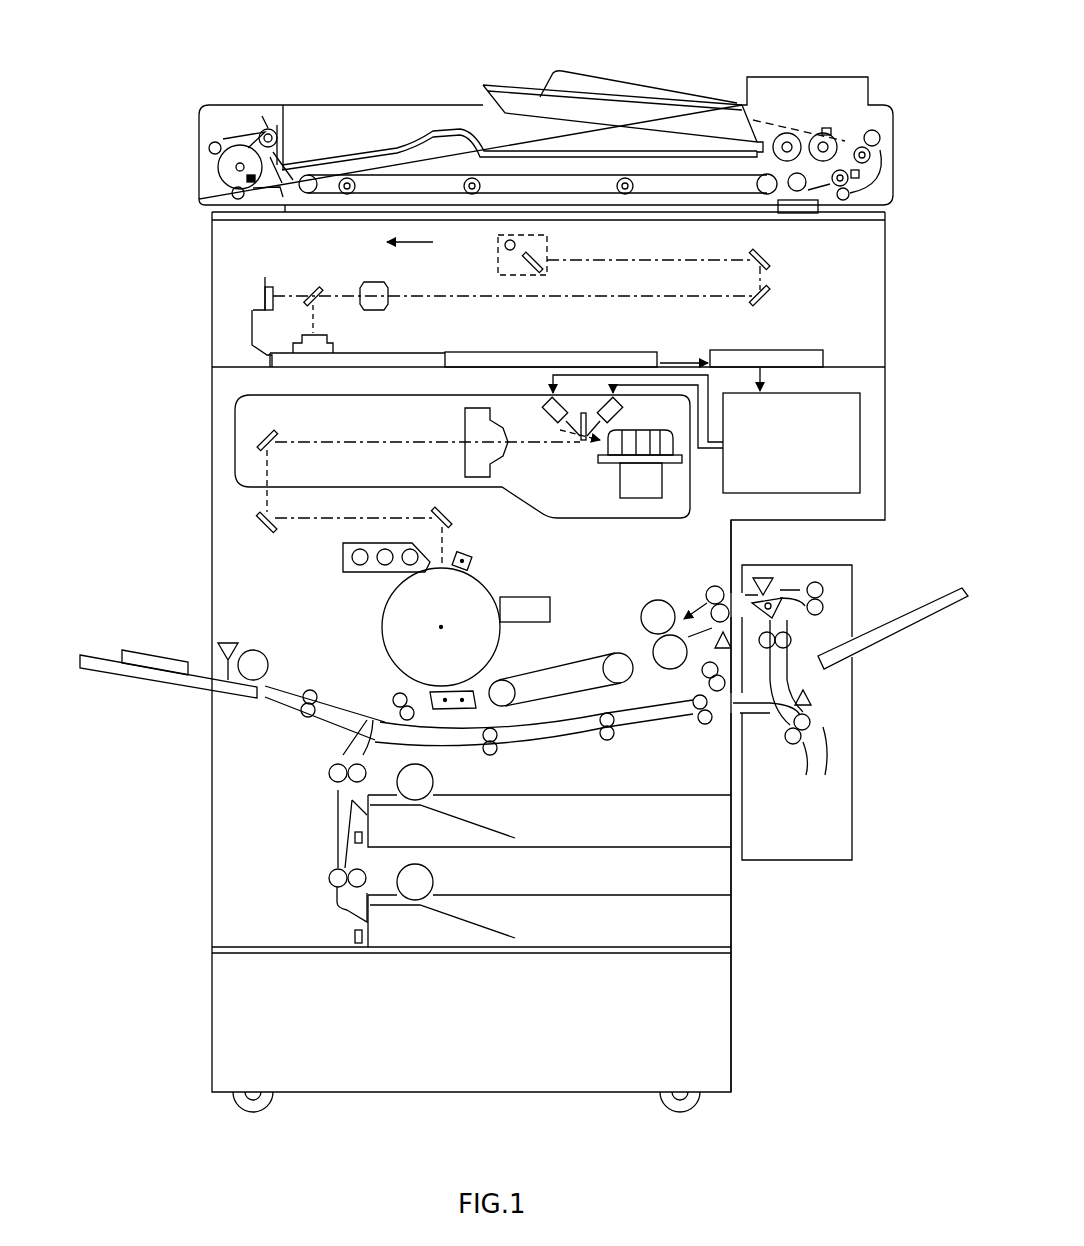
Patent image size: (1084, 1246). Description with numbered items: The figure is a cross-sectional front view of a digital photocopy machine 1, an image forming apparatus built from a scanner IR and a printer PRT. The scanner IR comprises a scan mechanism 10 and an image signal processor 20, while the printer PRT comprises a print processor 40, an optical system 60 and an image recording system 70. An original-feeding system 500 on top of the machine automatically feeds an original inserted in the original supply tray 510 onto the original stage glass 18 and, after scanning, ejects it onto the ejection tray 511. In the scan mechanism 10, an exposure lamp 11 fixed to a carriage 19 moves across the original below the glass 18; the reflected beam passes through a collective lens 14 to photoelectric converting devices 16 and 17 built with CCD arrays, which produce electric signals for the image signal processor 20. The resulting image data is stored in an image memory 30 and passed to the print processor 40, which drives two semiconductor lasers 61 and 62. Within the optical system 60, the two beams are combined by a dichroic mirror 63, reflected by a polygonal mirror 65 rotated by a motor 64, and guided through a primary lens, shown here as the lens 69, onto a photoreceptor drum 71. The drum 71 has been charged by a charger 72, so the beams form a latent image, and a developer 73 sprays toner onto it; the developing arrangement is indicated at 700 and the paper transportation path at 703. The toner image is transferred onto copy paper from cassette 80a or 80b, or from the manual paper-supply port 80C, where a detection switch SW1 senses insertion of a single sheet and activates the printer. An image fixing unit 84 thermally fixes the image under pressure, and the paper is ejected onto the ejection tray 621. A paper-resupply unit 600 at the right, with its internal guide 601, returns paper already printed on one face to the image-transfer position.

The digital photocopy machine 1 is at (497, 30).
The original-feeding system 500 is at (401, 102).
The original supply tray 510 is at (634, 108).
The ejection tray 511 is at (327, 153).
The scan mechanism 10 is at (507, 287).
The exposure lamp 11 is at (504, 246).
The collective lens 14 is at (388, 298).
The photoelectric converting device 16 is at (268, 284).
The photoelectric converting device 17 is at (330, 343).
The original stage glass 18 is at (622, 213).
The carriage 19 is at (548, 240).
The image signal processor 20 is at (558, 356).
The image memory 30 is at (730, 355).
The print processor 40 is at (860, 410).
The scanner IR is at (900, 347).
The printer PRT is at (960, 484).
The optical system 60 is at (439, 416).
The semiconductor laser 61 is at (622, 404).
The semiconductor laser 62 is at (552, 413).
The dichroic mirror 63 is at (583, 446).
The motor 64 is at (658, 491).
The polygonal mirror 65 is at (641, 447).
The f-theta lens 69 is at (463, 455).
The image recording system 70 is at (529, 577).
The photoreceptor drum 71 is at (402, 622).
The charger 72 is at (465, 555).
The developer 73 is at (343, 548).
The developing unit 700 is at (618, 630).
The sheet transport path 703 is at (575, 784).
The image fixing unit 84 is at (679, 670).
The detection switch SW1 is at (232, 640).
The manual paper-supply port 80C is at (107, 674).
The paper-supply cassette 80a is at (652, 798).
The paper-supply cassette 80b is at (580, 901).
The paper-resupply unit 600 is at (855, 790).
The sheet diverter 601 is at (773, 590).
The ejection tray 621 is at (907, 607).